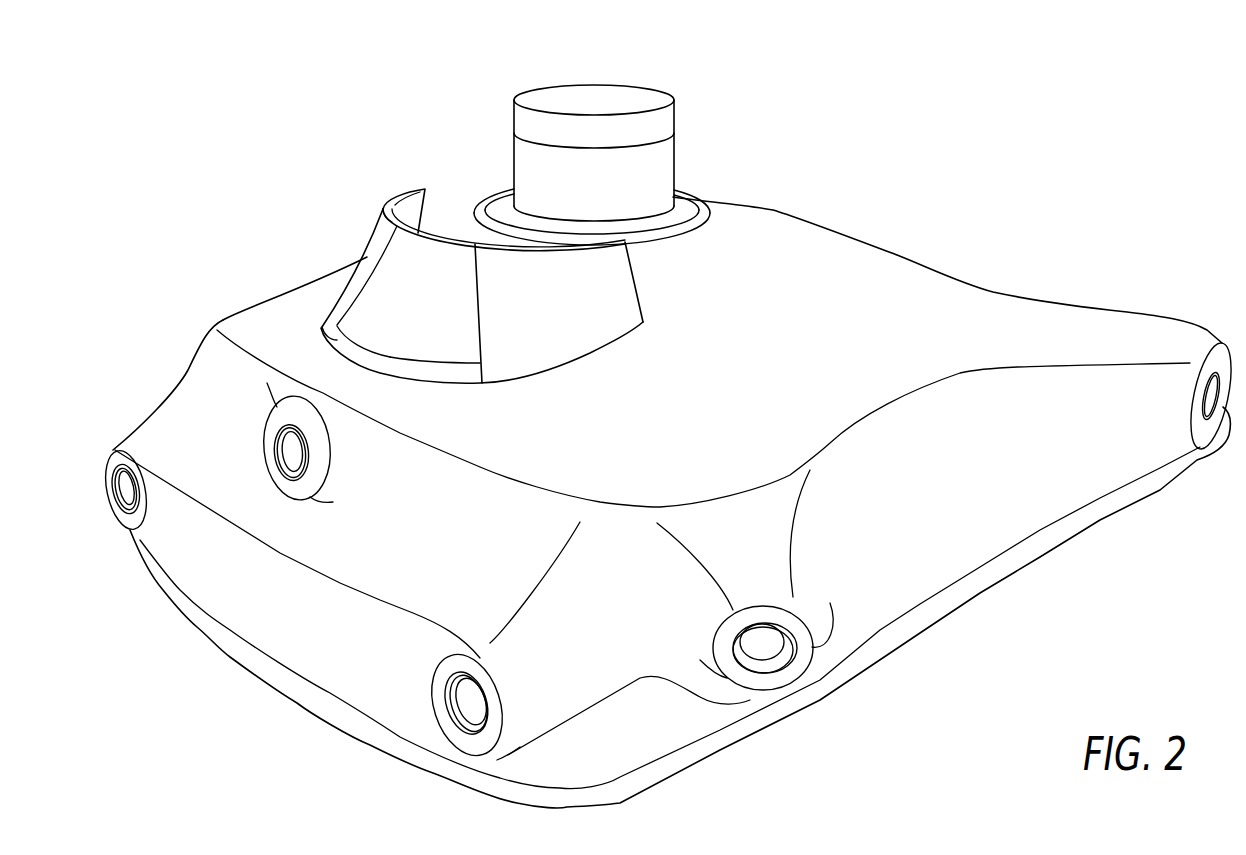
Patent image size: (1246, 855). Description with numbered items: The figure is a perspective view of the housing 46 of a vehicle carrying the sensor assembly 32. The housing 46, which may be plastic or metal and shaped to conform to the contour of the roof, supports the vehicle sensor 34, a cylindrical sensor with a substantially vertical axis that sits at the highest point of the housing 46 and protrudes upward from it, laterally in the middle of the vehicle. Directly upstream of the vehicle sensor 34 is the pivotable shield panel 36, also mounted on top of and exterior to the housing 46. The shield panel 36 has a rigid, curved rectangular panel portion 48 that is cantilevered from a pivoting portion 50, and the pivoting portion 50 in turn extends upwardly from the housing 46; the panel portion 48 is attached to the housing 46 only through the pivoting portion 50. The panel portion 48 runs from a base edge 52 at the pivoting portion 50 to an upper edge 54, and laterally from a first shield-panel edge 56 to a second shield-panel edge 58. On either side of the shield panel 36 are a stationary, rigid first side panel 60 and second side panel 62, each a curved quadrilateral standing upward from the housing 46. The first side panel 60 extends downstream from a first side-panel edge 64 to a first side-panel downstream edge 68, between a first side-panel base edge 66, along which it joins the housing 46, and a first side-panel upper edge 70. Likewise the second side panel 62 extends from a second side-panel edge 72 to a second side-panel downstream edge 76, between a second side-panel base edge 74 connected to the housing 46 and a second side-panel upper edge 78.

The sensor assembly 32 is at (699, 56).
The vehicle sensor 34 is at (675, 162).
The shield panel 36 is at (423, 343).
The housing 46 is at (853, 270).
The panel portion 48 is at (365, 323).
The pivoting portion 50 is at (370, 360).
The base edge 52 is at (391, 357).
The upper edge 54 is at (450, 242).
The first shield-panel edge 56 is at (482, 308).
The second shield-panel edge 58 is at (347, 305).
The first side panel 60 is at (590, 327).
The second side panel 62 is at (400, 213).
The first side-panel edge 64 is at (475, 293).
The first side-panel base edge 66 is at (553, 370).
The first side-panel downstream edge 68 is at (633, 283).
The first side-panel upper edge 70 is at (540, 247).
The second side-panel edge 72 is at (385, 258).
The second side-panel base edge 74 is at (320, 320).
The second side-panel downstream edge 76 is at (430, 199).
The second side-panel upper edge 78 is at (385, 203).